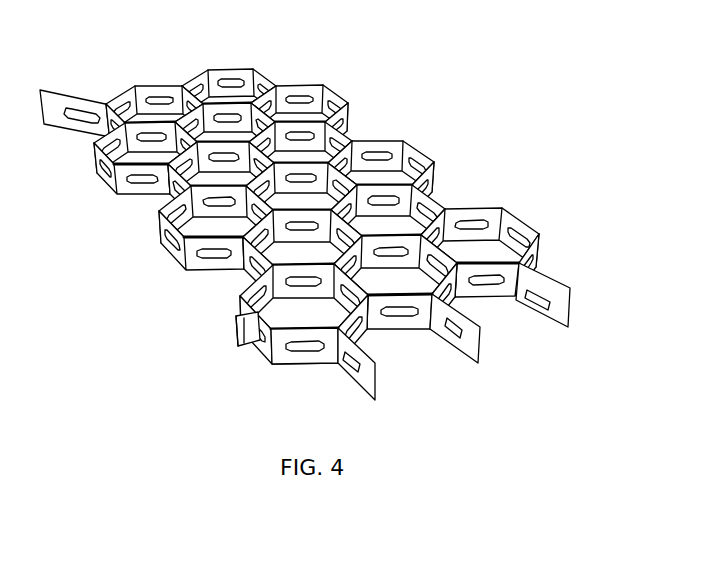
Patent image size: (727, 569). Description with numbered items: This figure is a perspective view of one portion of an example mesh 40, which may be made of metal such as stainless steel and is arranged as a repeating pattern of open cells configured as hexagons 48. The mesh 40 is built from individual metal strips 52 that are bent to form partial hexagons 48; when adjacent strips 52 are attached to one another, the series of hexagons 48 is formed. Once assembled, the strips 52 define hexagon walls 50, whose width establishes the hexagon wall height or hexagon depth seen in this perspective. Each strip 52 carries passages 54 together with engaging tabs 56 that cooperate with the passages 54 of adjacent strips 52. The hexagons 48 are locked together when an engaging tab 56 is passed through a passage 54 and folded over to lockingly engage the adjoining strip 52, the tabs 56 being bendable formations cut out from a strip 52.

The mesh 40 is at (305, 219).
The hexagon 48 is at (263, 358).
The hexagon wall 50 is at (275, 360).
The metal strip 52 is at (133, 82).
The passage 54 is at (310, 354).
The engaging tab 56 is at (252, 344).